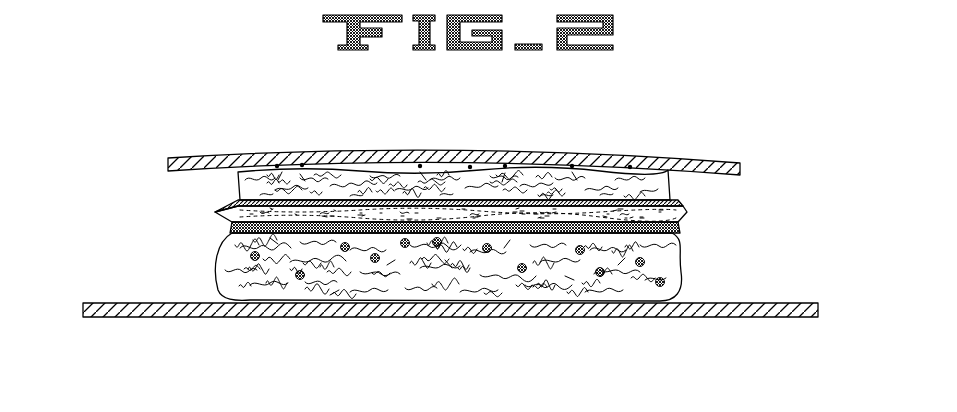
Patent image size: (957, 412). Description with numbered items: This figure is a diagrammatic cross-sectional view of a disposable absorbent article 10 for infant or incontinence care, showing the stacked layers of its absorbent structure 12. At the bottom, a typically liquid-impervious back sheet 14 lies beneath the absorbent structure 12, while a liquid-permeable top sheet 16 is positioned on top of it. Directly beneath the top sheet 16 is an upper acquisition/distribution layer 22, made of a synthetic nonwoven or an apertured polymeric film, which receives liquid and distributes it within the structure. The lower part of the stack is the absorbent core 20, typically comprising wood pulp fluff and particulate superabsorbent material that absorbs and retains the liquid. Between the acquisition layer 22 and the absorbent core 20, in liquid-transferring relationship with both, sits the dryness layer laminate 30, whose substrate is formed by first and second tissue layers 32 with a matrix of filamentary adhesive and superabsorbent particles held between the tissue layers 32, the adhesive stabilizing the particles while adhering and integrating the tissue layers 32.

The absorbent article 10 is at (737, 107).
The absorbent structure 12 is at (213, 177).
The back sheet 14 is at (163, 309).
The top sheet 16 is at (182, 155).
The absorbent core 20 is at (688, 268).
The acquisition/distribution layer 22 is at (713, 171).
The dryness layer laminate 30 is at (685, 213).
The tissue layers 32 is at (670, 194).